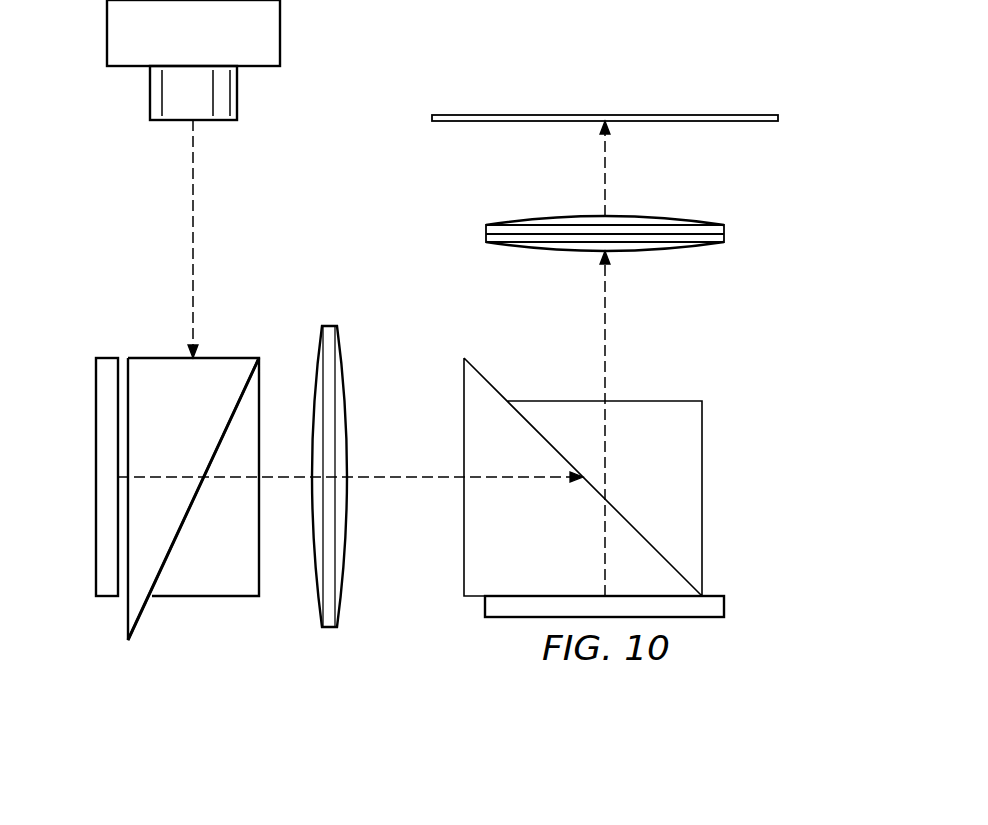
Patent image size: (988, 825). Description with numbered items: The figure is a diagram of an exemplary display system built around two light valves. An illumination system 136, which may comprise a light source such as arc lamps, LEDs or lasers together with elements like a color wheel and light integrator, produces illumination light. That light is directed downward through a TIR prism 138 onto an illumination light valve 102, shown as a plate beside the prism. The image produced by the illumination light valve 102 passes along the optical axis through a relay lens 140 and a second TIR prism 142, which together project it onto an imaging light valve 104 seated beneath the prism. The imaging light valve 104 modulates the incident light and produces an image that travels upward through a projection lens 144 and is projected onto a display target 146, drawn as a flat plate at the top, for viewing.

The illumination system 136 is at (107, 30).
The illumination light valve 102 is at (96, 500).
The TIR prism 138 is at (182, 598).
The relay lens 140 is at (327, 630).
The TIR prism 142 is at (702, 508).
The imaging light valve 104 is at (724, 606).
The projection lens 144 is at (724, 233).
The display target 146 is at (778, 117).